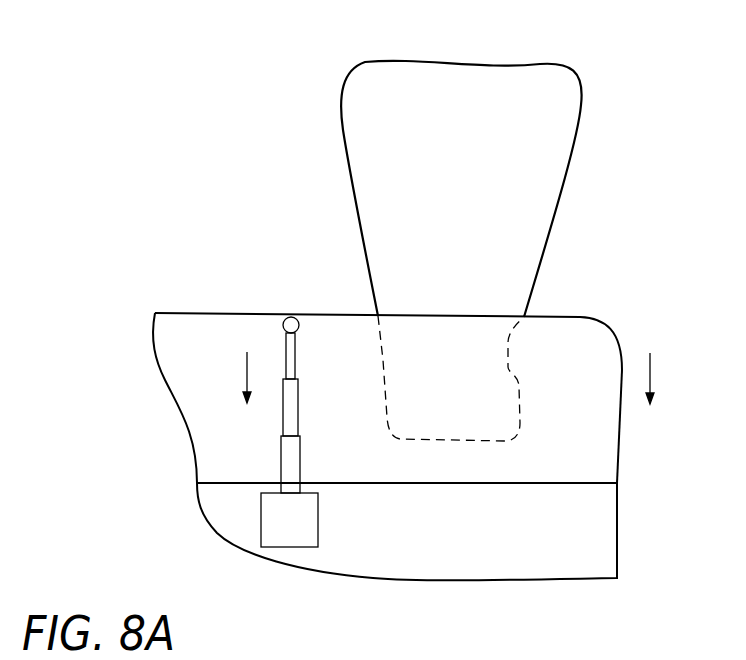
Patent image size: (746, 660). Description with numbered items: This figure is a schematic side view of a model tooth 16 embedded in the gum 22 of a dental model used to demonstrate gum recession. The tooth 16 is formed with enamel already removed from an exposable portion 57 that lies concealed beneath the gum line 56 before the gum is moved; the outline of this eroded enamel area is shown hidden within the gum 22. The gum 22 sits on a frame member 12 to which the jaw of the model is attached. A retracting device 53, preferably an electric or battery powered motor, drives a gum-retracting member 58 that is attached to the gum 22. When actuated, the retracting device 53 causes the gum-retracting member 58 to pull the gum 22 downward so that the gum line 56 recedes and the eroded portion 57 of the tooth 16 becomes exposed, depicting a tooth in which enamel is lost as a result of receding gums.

The tooth 16 is at (507, 100).
The gum line 56 is at (568, 315).
The exposed portion of eroded enamel 57 is at (520, 345).
The gum 22 is at (603, 412).
The frame member 12 is at (605, 505).
The gum-retracting member 58 is at (287, 430).
The retracting device 53 is at (260, 510).